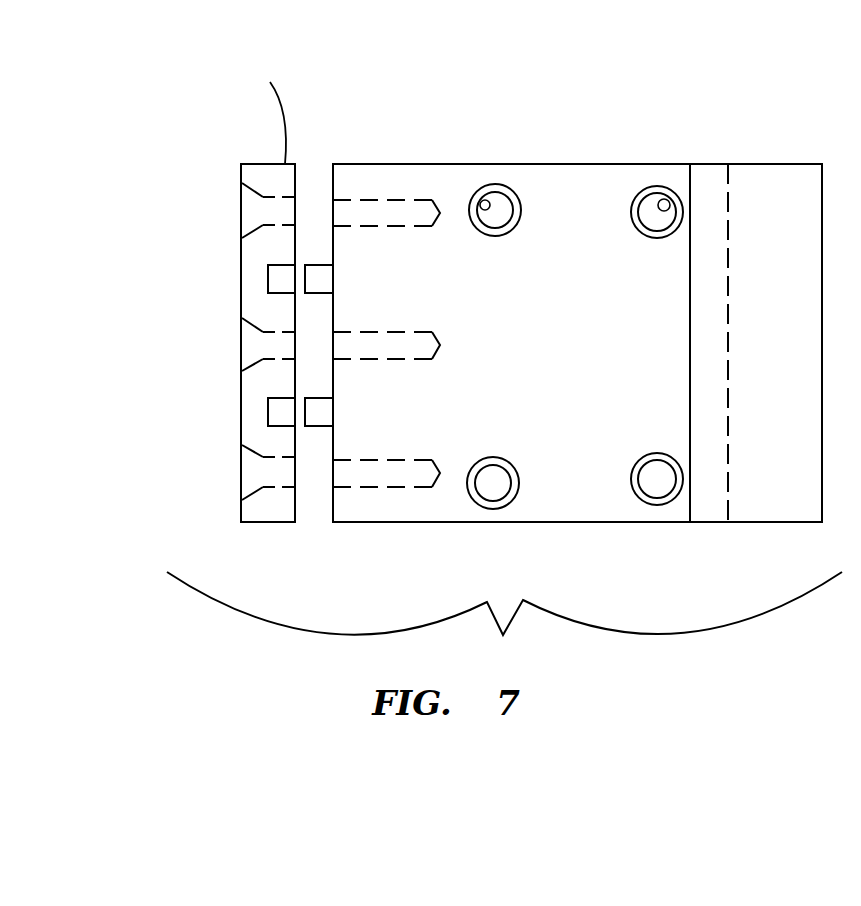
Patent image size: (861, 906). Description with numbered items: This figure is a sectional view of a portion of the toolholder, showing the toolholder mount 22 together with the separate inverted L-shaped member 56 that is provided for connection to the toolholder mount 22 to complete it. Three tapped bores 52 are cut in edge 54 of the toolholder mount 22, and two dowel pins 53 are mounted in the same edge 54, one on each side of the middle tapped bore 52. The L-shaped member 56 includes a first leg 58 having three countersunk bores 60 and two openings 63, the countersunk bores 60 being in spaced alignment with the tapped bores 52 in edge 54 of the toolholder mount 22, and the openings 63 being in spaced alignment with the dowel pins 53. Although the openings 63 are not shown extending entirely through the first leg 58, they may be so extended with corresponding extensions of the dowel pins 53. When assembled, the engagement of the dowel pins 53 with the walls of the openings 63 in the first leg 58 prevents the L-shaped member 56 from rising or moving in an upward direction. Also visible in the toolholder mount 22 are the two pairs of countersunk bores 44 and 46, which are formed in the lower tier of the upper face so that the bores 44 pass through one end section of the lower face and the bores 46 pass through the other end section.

The toolholder mount 22 is at (612, 364).
The countersunk bores 44 is at (483, 203).
The countersunk bores 46 is at (655, 212).
The tapped bores 52 is at (358, 208).
The dowel pins 53 is at (320, 277).
The edge 54 is at (330, 503).
The inverted L-shaped member 56 is at (222, 176).
The first leg 58 is at (263, 118).
The countersunk bores 60 is at (257, 212).
The openings 63 is at (283, 278).